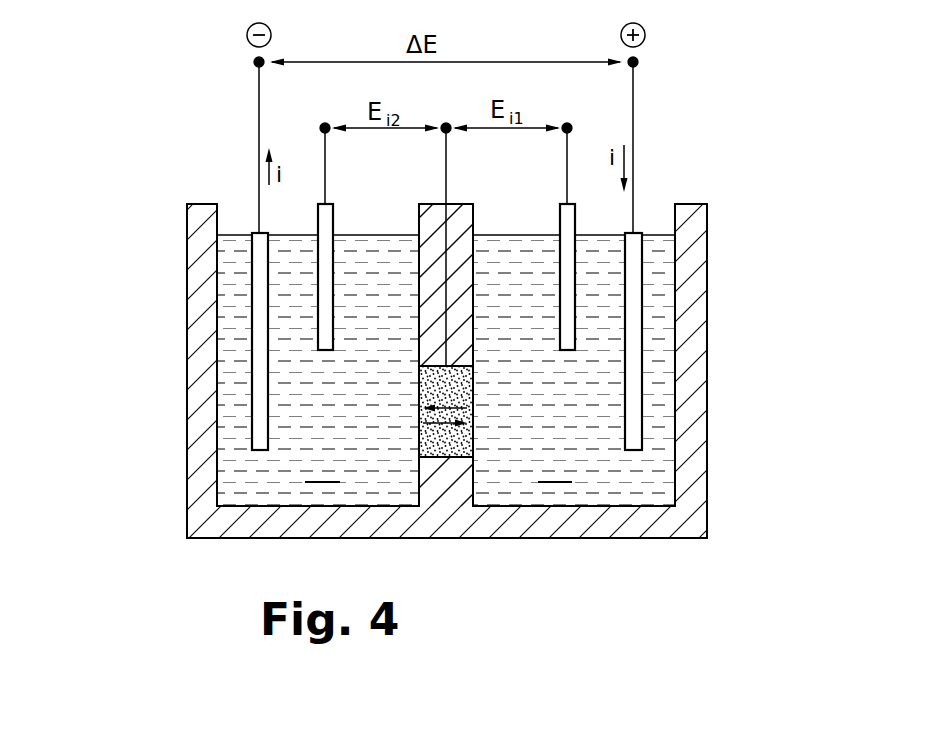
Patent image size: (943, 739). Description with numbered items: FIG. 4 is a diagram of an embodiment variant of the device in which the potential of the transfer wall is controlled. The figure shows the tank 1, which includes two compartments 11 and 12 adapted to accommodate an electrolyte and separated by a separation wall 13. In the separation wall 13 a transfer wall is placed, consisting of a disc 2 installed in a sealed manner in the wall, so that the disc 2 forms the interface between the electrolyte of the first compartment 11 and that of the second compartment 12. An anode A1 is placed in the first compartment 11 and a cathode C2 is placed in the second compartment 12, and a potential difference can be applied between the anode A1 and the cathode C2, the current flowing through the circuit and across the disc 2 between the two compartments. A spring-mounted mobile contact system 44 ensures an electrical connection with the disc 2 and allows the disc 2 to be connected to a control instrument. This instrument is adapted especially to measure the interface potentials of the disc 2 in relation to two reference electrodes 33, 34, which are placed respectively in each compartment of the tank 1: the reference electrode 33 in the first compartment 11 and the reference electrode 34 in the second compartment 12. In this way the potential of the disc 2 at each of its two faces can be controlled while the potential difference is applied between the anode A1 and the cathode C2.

The tank 1 is at (688, 497).
The disc 2 is at (447, 442).
The first compartment 11 is at (667, 365).
The second compartment 12 is at (230, 452).
The separation wall 13 is at (426, 222).
The reference electrode 33 is at (562, 220).
The reference electrode 34 is at (333, 218).
The spring-mounted mobile contact system 44 is at (447, 366).
The cathode C2 is at (258, 262).
The anode A1 is at (642, 260).